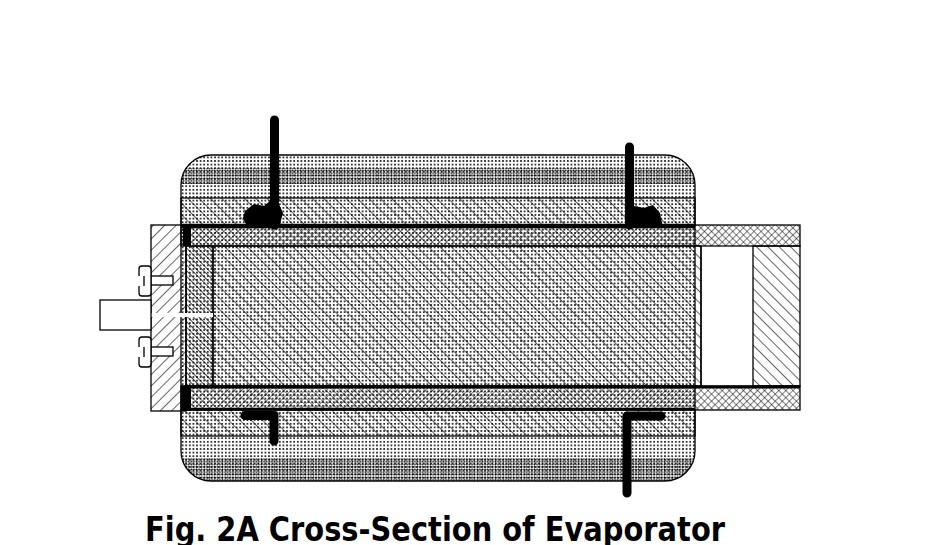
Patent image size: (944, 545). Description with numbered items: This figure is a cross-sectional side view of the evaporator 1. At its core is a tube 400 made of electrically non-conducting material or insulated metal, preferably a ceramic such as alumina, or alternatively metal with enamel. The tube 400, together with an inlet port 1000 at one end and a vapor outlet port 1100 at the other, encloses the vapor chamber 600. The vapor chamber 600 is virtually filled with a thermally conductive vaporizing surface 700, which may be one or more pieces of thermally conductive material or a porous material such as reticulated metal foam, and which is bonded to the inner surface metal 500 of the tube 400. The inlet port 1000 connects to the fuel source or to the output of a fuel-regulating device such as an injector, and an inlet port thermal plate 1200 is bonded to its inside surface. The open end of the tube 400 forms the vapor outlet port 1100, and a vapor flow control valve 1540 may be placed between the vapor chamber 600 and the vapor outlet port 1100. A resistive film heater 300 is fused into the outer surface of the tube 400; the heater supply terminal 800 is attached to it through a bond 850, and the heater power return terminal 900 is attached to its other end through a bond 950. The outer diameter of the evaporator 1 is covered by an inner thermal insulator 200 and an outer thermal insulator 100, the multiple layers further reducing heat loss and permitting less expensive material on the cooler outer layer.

The evaporator 1 is at (108, 73).
The outer thermal insulator 100 is at (318, 163).
The inner thermal insulator 200 is at (333, 200).
The resistive film heater 300 is at (353, 263).
The tube 400 is at (393, 228).
The inner surface metal 500 is at (442, 265).
The vapor chamber 600 is at (478, 278).
The thermally conductive vaporizing surface 700 is at (525, 277).
The heater supply terminal 800 is at (261, 133).
The bond 850 is at (240, 200).
The heater power return terminal 900 is at (644, 168).
The bond 950 is at (653, 215).
The inlet port 1000 is at (108, 308).
The vapor outlet port 1100 is at (773, 225).
The inlet port thermal plate 1200 is at (180, 363).
The vapor flow control valve 1540 is at (723, 345).